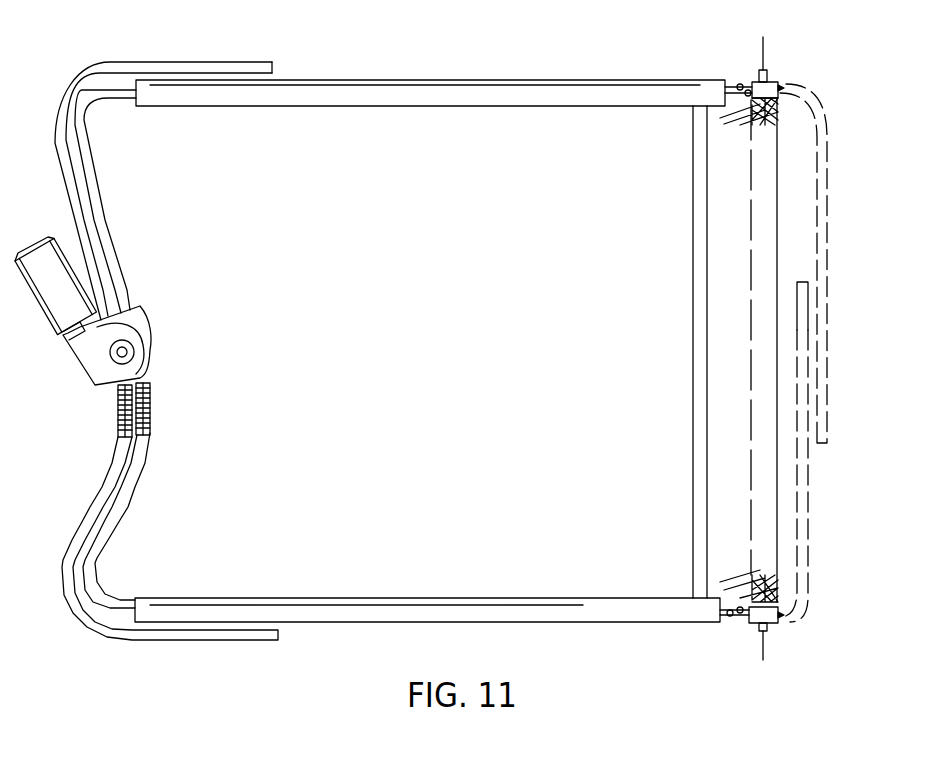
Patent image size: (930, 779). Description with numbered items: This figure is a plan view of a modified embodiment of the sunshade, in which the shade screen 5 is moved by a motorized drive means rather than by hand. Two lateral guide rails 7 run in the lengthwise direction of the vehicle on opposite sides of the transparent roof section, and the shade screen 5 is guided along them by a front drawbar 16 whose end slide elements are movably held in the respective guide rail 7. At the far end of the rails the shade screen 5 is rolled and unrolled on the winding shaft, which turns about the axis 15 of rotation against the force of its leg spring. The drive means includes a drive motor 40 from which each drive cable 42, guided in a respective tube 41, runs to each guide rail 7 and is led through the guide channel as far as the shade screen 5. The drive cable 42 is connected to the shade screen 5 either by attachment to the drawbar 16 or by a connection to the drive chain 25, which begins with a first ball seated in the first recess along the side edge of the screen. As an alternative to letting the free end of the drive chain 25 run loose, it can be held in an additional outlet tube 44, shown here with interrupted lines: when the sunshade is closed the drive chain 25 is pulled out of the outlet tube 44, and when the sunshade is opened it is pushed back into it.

The shade screen 5 is at (728, 311).
The guide rail 7 is at (461, 80).
The axis of rotation 15 is at (762, 44).
The front drawbar 16 is at (700, 246).
The drive chain 25 is at (743, 622).
The drive motor 40 is at (53, 304).
The tube 41 is at (70, 188).
The drive cable 42 is at (120, 405).
The outlet tube 44 is at (812, 90).